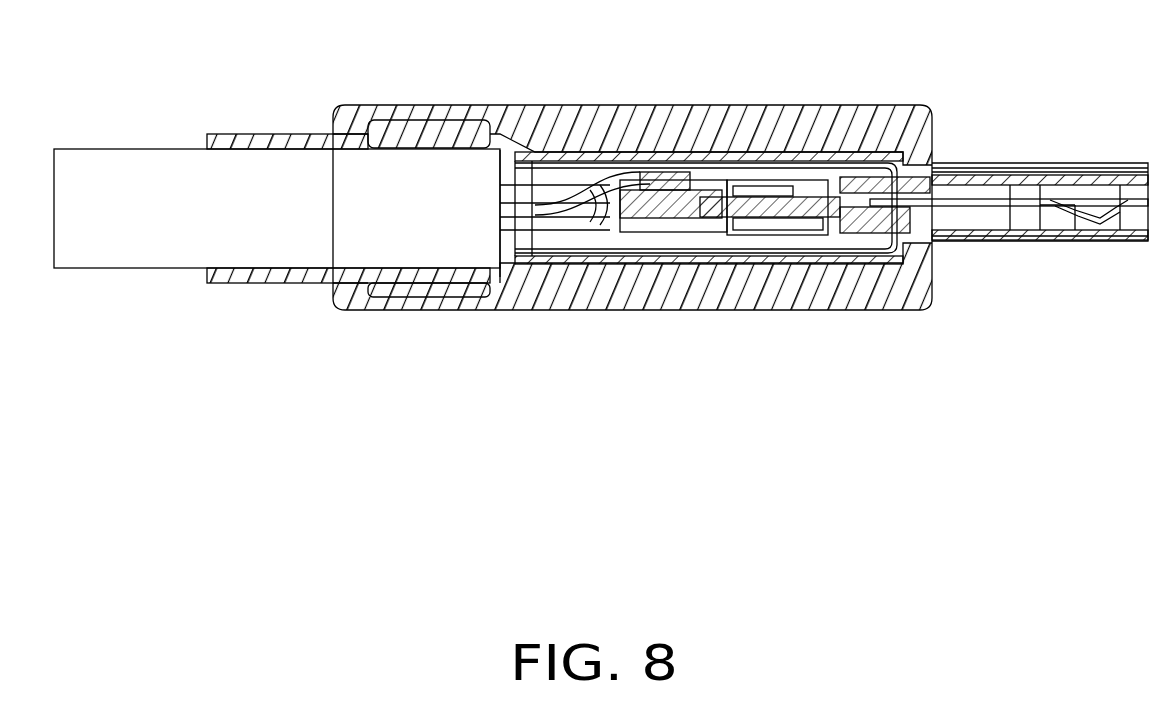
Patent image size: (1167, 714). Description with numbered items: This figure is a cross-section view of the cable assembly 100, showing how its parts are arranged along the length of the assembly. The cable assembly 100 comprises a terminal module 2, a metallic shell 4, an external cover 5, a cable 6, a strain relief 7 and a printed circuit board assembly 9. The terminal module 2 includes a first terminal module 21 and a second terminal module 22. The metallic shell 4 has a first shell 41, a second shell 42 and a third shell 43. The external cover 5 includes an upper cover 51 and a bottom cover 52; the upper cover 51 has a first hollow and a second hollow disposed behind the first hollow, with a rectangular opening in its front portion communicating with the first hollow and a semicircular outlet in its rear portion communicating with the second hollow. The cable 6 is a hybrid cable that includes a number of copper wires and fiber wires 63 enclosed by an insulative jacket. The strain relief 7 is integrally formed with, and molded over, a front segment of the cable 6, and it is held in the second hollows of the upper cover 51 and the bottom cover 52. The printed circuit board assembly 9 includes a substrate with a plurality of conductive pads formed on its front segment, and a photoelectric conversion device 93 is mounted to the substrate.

The cable assembly 100 is at (438, 84).
The terminal module 2 is at (1025, 68).
The first terminal module 21 is at (930, 175).
The second terminal module 22 is at (975, 178).
The metallic shell 4 is at (938, 386).
The first shell 41 is at (921, 247).
The second shell 42 is at (822, 162).
The third shell 43 is at (878, 160).
The external cover 5 is at (697, 408).
The upper cover 51 is at (633, 135).
The bottom cover 52 is at (683, 287).
The cable 6 is at (162, 178).
The fiber wires 63 is at (598, 186).
The strain relief 7 is at (394, 283).
The printed circuit board assembly 9 is at (747, 197).
The photoelectric conversion device 93 is at (703, 180).